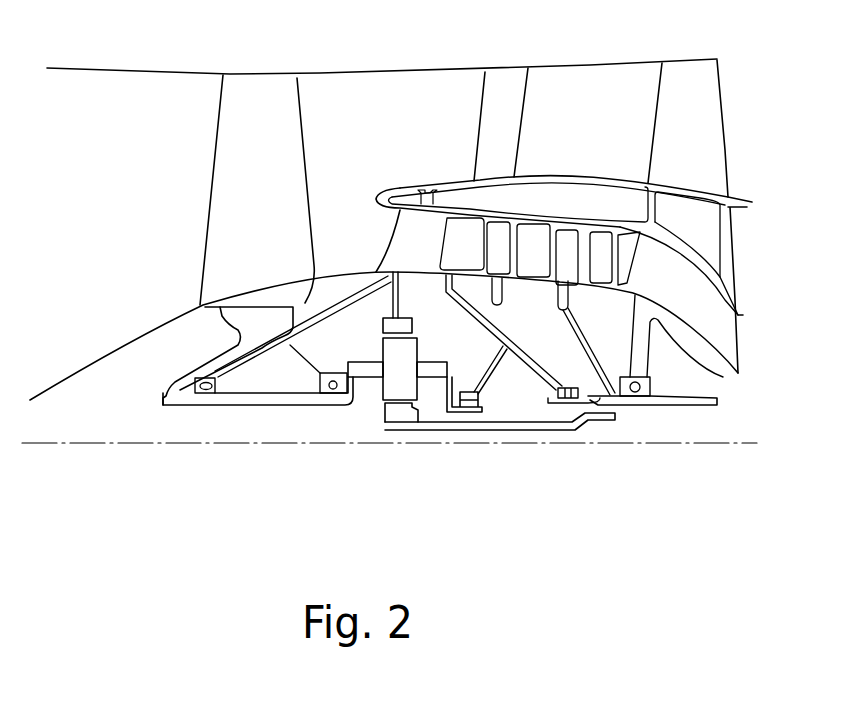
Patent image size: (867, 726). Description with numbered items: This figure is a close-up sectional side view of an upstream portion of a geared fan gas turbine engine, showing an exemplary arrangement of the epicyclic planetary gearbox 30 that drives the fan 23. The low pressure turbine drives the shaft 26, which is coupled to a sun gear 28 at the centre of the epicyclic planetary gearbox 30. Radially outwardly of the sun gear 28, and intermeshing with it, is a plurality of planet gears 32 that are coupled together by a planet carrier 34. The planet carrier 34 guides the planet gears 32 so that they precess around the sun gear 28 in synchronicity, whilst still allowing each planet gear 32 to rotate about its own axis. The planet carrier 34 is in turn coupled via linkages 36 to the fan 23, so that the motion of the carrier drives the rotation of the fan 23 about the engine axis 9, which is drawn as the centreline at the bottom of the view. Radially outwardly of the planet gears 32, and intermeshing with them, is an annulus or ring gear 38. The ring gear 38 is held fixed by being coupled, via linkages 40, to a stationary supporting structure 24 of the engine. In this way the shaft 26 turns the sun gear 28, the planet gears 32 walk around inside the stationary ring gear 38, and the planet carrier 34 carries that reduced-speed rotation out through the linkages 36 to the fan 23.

The engine axis 9 is at (192, 443).
The fan 23 is at (227, 192).
The stationary supporting structure 24 is at (407, 239).
The shaft 26 is at (537, 428).
The sun gear 28 is at (402, 412).
The epicyclic planetary gearbox 30 is at (353, 423).
The planet gears 32 is at (383, 398).
The planet carrier 34 is at (440, 412).
The linkages 36 is at (358, 392).
The ring gear 38 is at (382, 329).
The linkages 40 is at (403, 307).